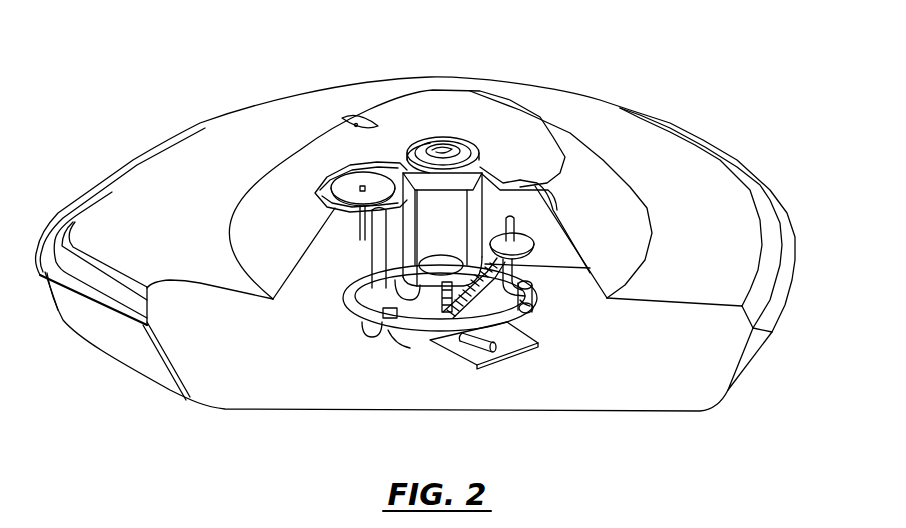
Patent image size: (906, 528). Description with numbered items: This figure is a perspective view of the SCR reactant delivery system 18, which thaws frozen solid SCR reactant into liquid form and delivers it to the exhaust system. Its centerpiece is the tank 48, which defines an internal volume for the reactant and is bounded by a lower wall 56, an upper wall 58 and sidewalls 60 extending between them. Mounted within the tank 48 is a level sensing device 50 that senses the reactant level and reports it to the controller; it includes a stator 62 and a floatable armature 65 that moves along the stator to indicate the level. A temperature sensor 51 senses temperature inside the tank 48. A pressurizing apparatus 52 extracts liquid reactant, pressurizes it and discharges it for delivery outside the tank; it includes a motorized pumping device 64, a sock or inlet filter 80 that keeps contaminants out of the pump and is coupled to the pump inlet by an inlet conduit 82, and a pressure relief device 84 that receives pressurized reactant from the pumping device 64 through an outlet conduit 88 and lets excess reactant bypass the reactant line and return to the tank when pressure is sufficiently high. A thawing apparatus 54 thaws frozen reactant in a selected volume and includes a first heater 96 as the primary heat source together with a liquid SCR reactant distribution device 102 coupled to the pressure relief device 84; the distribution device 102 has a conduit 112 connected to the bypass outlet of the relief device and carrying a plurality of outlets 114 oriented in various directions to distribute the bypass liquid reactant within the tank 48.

The SCR reactant delivery system 18 is at (415, 226).
The tank 48 is at (415, 235).
The level sensing device 50 is at (367, 247).
The temperature sensor 51 is at (352, 230).
The pressurizing apparatus 52 is at (527, 213).
The thawing apparatus 54 is at (407, 352).
The lower wall 56 is at (305, 412).
The upper wall 58 is at (410, 103).
The sidewalls 60 is at (55, 297).
The stator 62 is at (367, 287).
The motorized pumping device 64 is at (472, 207).
The floatable armature 65 is at (363, 337).
The inlet filter 80 is at (497, 373).
The inlet conduit 82 is at (445, 300).
The pressure relief device 84 is at (540, 258).
The outlet conduit 88 is at (533, 320).
The first heater 96 is at (410, 290).
The liquid SCR reactant distribution device 102 is at (537, 310).
The conduit 112 is at (543, 347).
The outlets 114 is at (393, 267).